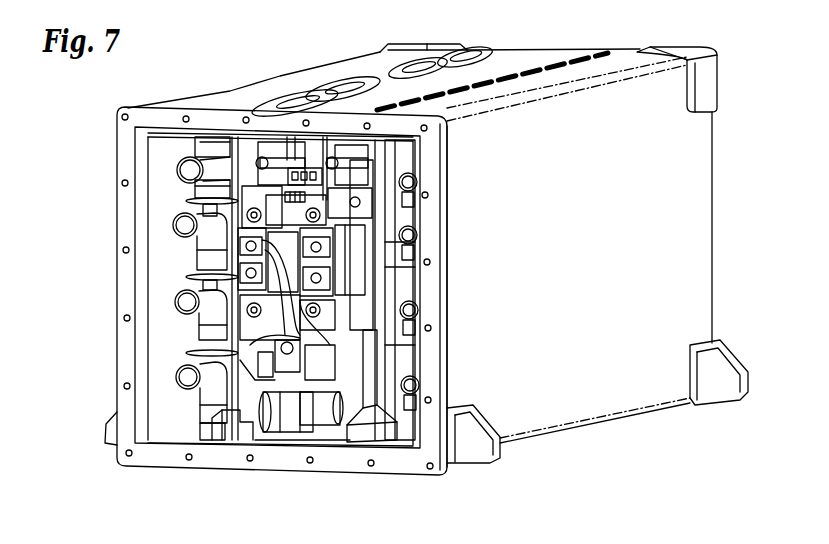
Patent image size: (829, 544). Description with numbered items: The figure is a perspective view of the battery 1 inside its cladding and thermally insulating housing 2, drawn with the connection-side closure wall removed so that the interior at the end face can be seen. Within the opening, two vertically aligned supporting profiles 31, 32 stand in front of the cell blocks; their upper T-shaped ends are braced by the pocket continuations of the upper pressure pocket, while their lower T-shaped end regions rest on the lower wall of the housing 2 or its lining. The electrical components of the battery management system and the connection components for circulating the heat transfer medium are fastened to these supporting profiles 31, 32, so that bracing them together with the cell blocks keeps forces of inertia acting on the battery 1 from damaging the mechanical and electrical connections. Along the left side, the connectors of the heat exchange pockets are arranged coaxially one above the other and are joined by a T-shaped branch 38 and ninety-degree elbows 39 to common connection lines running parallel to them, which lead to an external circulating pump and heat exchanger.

The battery 1 is at (426, 259).
The housing 2 is at (559, 239).
The supporting profile 31 is at (224, 428).
The supporting profile 32 is at (388, 322).
The T-shaped branch 38 is at (207, 183).
The 90° elbow 39 is at (207, 228).